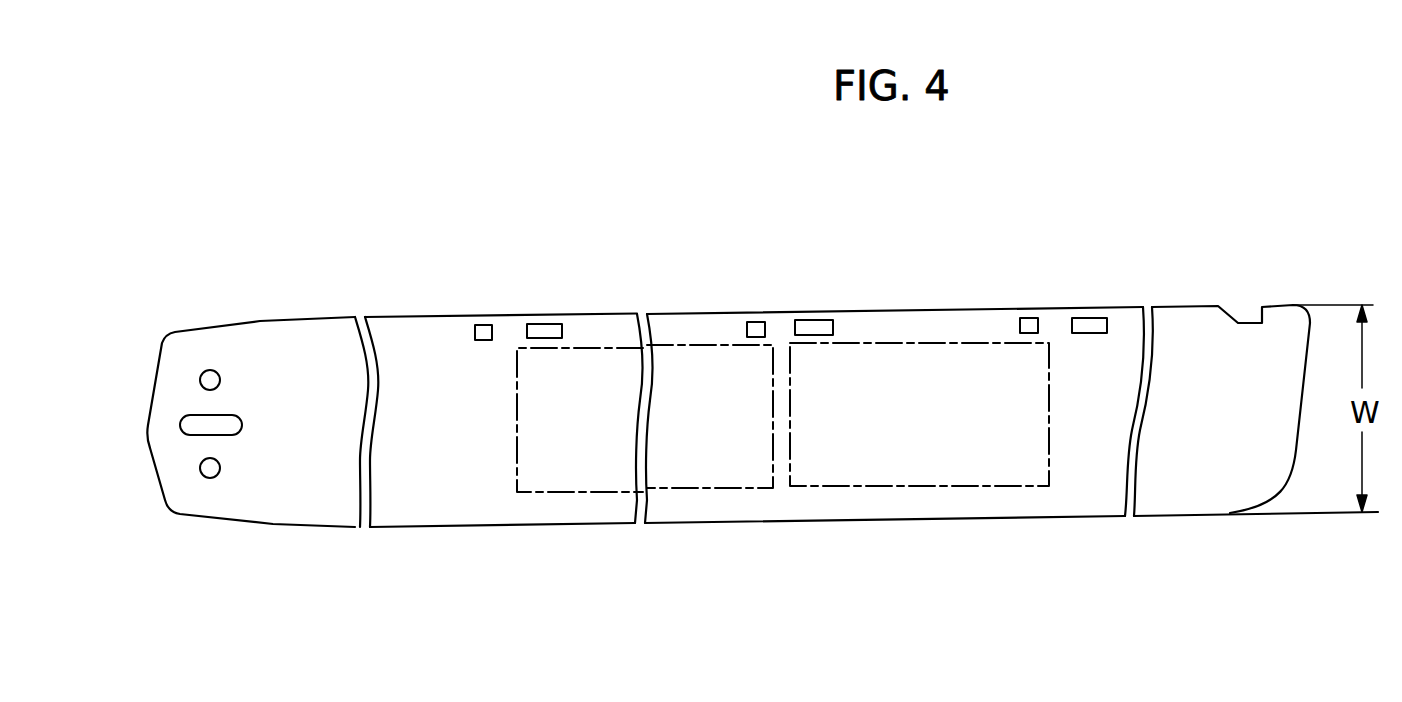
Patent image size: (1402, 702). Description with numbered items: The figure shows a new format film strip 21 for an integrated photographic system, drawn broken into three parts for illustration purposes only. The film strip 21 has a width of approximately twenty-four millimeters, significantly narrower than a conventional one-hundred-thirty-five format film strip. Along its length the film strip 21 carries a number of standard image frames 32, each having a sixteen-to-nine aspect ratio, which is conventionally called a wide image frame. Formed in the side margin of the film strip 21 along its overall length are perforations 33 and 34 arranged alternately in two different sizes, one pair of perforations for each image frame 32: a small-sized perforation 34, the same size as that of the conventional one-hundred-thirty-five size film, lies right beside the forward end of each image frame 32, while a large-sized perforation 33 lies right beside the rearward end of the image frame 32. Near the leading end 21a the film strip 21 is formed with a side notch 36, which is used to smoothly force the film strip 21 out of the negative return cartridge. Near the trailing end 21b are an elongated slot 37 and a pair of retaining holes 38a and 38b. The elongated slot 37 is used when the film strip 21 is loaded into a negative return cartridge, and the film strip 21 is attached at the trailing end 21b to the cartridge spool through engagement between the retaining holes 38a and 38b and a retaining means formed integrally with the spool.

The film strip 21 is at (719, 383).
The leading end 21a is at (1297, 453).
The trailing end 21b is at (214, 422).
The image frame 32 is at (518, 397).
The large-sized perforation 33 is at (547, 325).
The small-sized perforation 34 is at (482, 325).
The side notch 36 is at (1262, 322).
The elongated slot 37 is at (242, 425).
The retaining hole 38a is at (220, 380).
The retaining hole 38b is at (220, 473).